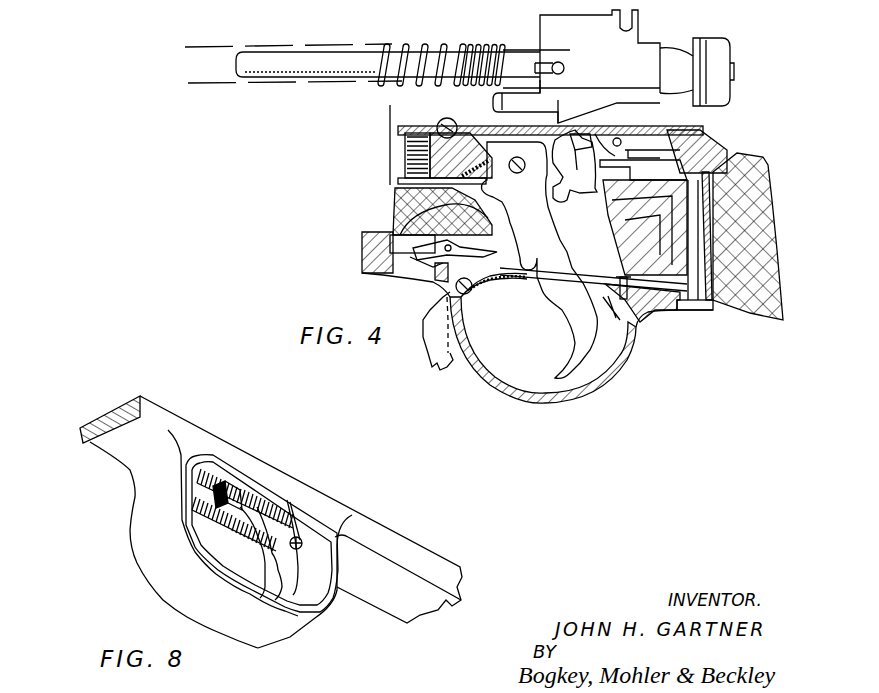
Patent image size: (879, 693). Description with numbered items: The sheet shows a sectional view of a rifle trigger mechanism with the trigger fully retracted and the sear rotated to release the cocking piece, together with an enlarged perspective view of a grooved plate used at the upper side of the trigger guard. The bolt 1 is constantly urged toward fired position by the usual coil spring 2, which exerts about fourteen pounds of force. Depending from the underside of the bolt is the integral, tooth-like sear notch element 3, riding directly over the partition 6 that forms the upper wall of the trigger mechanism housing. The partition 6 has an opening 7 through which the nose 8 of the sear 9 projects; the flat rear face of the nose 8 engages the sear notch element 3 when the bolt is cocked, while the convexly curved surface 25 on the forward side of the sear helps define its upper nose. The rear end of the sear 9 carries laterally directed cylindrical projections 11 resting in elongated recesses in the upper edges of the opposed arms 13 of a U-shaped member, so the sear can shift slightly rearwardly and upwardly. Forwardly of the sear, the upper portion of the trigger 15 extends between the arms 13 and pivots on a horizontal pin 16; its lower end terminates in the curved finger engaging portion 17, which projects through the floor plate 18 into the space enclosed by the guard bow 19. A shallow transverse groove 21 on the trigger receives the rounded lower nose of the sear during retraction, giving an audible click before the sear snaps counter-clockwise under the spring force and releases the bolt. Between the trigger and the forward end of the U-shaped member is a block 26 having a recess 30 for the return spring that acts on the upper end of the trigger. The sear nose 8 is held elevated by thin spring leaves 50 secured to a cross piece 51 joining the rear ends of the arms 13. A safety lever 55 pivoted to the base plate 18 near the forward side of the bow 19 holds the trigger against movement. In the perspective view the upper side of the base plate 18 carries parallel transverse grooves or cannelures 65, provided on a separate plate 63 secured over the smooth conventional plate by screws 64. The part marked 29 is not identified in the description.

In FIG. 4, the bolt 1 is at (722, 40).
In FIG. 4, the coil spring 2 is at (387, 52).
In FIG. 4, the sear notch element 3 is at (559, 121).
In FIG. 4, the partition 6 is at (497, 126).
In FIG. 4, the opening 7 is at (592, 131).
In FIG. 4, the sear nose 8 is at (581, 123).
In FIG. 4, the sear 9 is at (578, 176).
In FIG. 4, the cylindrical projections 11 is at (630, 131).
In FIG. 4, the arms 13 is at (665, 134).
In FIG. 4, the trigger 15 is at (537, 231).
In FIG. 4, the horizontal pin 16 is at (516, 174).
In FIG. 4, the curved finger engaging portion 17 is at (560, 318).
In FIG. 8, the curved finger engaging portion 17 is at (279, 534).
In FIG. 4, the floor plate 18 is at (527, 285).
In FIG. 8, the floor plate 18 is at (233, 460).
In FIG. 4, the guard bow 19 is at (638, 362).
In FIG. 4, the groove 21 is at (548, 195).
In FIG. 4, the convexly curved surface 25 is at (565, 150).
In FIG. 4, the block 26 is at (405, 141).
In FIG. 4, the spring seat plate 29 is at (400, 180).
In FIG. 4, the recess 30 is at (440, 170).
In FIG. 4, the spring leaves 50 is at (630, 166).
In FIG. 4, the cross piece 51 is at (660, 135).
In FIG. 4, the lever 55 is at (425, 330).
In FIG. 8, the plate 63 is at (290, 500).
In FIG. 4, the screws 64 is at (614, 318).
In FIG. 8, the screws 64 is at (348, 514).
In FIG. 8, the grooves or cannelures 65 is at (258, 488).